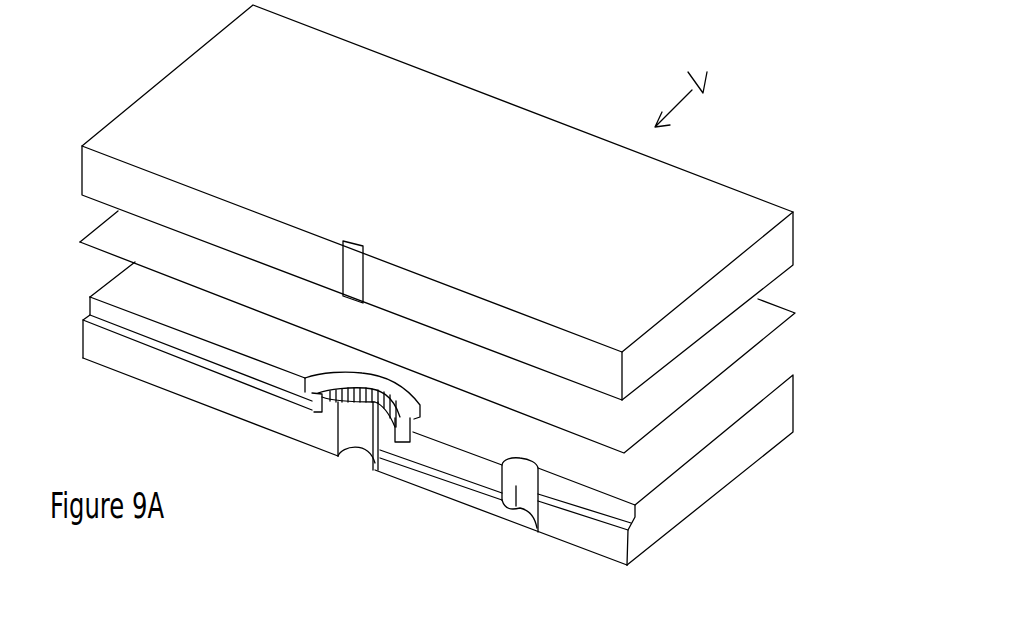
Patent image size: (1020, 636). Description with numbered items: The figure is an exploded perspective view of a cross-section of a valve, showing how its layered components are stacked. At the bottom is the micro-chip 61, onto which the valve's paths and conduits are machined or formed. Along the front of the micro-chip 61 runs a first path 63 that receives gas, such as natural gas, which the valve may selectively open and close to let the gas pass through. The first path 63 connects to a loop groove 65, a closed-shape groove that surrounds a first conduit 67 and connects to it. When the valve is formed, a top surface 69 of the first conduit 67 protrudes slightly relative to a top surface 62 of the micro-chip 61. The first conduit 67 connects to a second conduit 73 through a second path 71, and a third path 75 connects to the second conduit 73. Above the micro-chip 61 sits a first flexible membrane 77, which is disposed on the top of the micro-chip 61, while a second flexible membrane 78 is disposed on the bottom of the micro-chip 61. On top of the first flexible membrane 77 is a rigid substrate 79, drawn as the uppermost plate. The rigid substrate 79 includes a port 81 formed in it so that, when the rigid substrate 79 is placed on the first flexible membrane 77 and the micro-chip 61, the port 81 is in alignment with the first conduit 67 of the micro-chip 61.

The micro-chip 61 is at (464, 389).
The top surface of the micro-chip 62 is at (298, 357).
The first path 63 is at (168, 350).
The loop groove 65 is at (318, 400).
The first conduit 67 is at (353, 437).
The top surface of the first conduit 69 is at (379, 468).
The second path 71 is at (450, 488).
The second conduit 73 is at (512, 508).
The third path 75 is at (604, 518).
The first flexible membrane 77 is at (748, 333).
The second flexible membrane 78 is at (518, 523).
The rigid substrate 79 is at (762, 217).
The port 81 is at (358, 250).